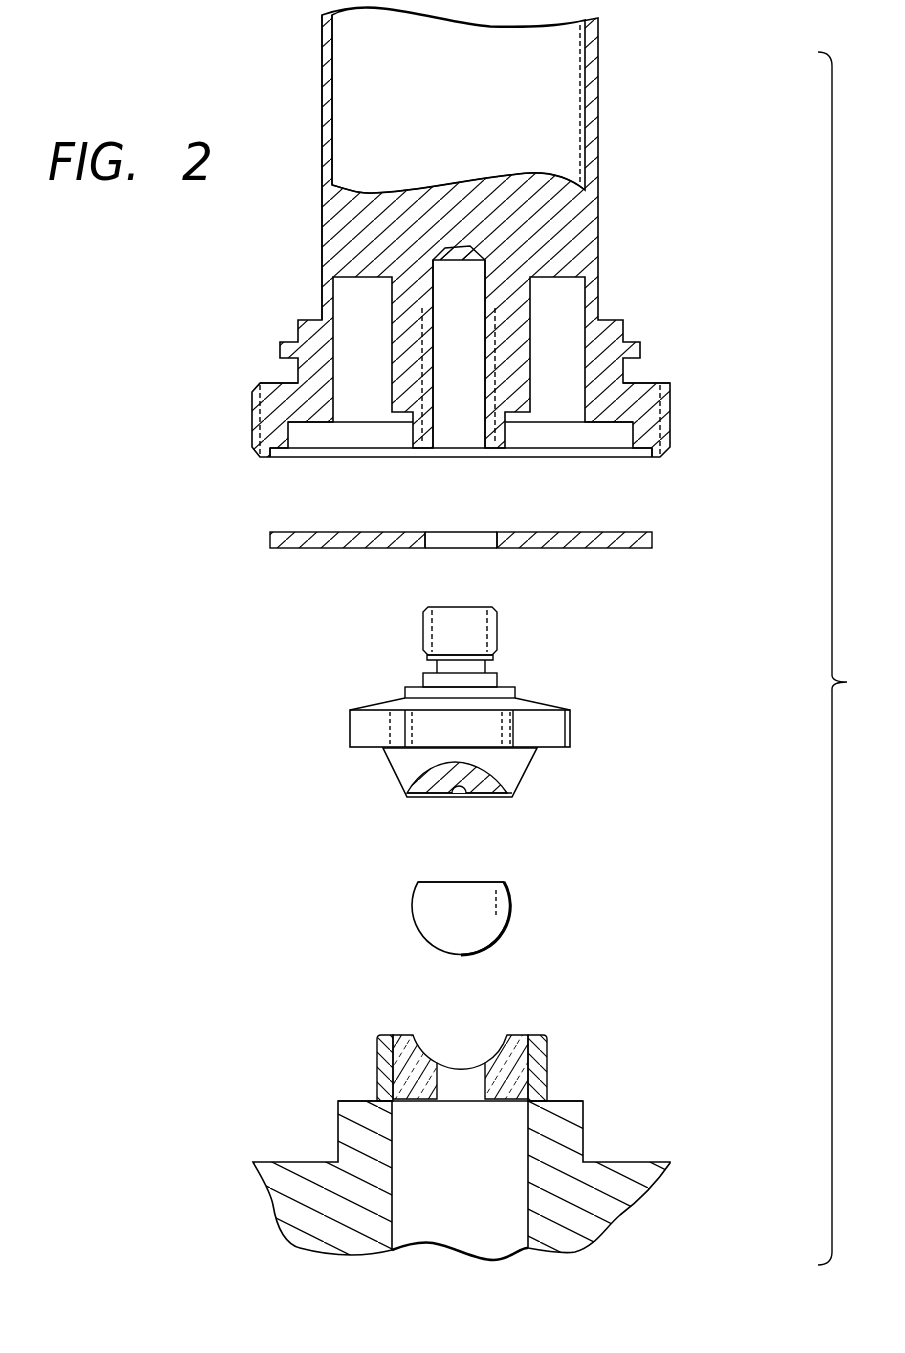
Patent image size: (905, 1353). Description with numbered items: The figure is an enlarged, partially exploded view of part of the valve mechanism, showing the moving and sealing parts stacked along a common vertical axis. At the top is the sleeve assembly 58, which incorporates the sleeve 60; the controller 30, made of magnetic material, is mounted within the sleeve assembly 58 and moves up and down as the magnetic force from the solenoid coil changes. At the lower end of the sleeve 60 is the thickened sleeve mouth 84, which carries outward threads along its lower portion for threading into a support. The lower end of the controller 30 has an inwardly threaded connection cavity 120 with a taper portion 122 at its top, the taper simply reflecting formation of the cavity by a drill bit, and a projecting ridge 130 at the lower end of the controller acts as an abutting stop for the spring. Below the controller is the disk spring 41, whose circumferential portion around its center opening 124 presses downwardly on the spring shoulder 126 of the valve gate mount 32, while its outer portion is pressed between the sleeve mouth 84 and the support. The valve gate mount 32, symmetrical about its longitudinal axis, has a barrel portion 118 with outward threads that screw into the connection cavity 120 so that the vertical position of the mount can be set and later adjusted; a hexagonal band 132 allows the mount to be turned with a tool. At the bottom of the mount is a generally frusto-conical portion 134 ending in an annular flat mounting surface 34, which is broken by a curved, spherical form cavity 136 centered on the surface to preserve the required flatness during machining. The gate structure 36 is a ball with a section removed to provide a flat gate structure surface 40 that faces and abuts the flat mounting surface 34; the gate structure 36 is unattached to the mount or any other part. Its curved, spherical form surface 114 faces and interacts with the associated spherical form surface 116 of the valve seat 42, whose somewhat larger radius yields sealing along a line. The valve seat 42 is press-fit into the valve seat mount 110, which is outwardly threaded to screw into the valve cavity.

The controller 30 is at (473, 116).
The valve gate mount 32 is at (590, 728).
The flat mounting surface 34 is at (427, 797).
The gate structure 36 is at (430, 910).
The flat gate structure surface 40 is at (458, 880).
The disk spring 41 is at (300, 550).
The valve seat 42 is at (520, 1037).
The sleeve assembly 58 is at (618, 110).
The sleeve 60 is at (320, 72).
The sleeve mouth 84 is at (680, 413).
The valve seat mount 110 is at (628, 1175).
The spherical form surface of the gate structure 114 is at (507, 928).
The spherical form surface of the valve seat 116 is at (417, 1045).
The barrel portion 118 is at (423, 632).
The connection cavity 120 is at (448, 355).
The taper portion 122 is at (452, 258).
The center opening 124 is at (490, 540).
The spring shoulder 126 is at (507, 688).
The projecting ridge 130 is at (432, 440).
The hexagonal band 132 is at (362, 727).
The frusto-conical portion 134 is at (390, 768).
The spherical form cavity 136 is at (458, 795).